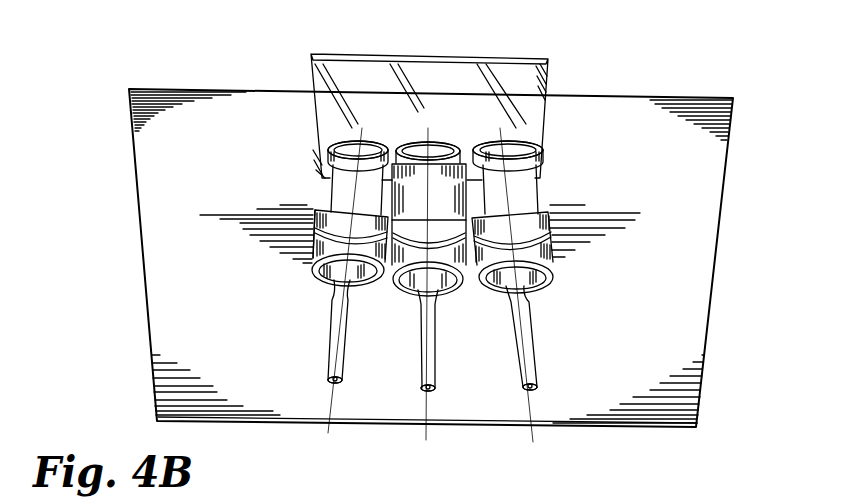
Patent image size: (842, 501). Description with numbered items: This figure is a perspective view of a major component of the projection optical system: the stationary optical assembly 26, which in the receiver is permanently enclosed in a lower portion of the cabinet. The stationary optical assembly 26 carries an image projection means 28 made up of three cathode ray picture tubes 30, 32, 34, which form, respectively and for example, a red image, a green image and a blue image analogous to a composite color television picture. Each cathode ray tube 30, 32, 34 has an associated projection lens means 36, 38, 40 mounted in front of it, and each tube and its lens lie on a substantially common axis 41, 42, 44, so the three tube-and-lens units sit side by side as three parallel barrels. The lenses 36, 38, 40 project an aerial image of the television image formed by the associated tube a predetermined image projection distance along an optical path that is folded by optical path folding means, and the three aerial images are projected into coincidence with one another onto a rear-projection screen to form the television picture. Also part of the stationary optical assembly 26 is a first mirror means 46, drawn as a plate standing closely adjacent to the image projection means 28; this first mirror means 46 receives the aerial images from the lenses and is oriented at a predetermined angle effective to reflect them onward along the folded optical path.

The stationary optical assembly 26 is at (198, 87).
The image projection means 28 is at (294, 264).
The cathode ray tube 30 is at (333, 294).
The cathode ray tube 32 is at (415, 306).
The cathode ray tube 34 is at (507, 298).
The projection lens means 36 is at (345, 140).
The projection lens means 38 is at (437, 143).
The projection lens means 40 is at (517, 143).
The common axis 41 is at (332, 403).
The common axis 42 is at (427, 404).
The common axis 44 is at (533, 404).
The first mirror means 46 is at (432, 58).